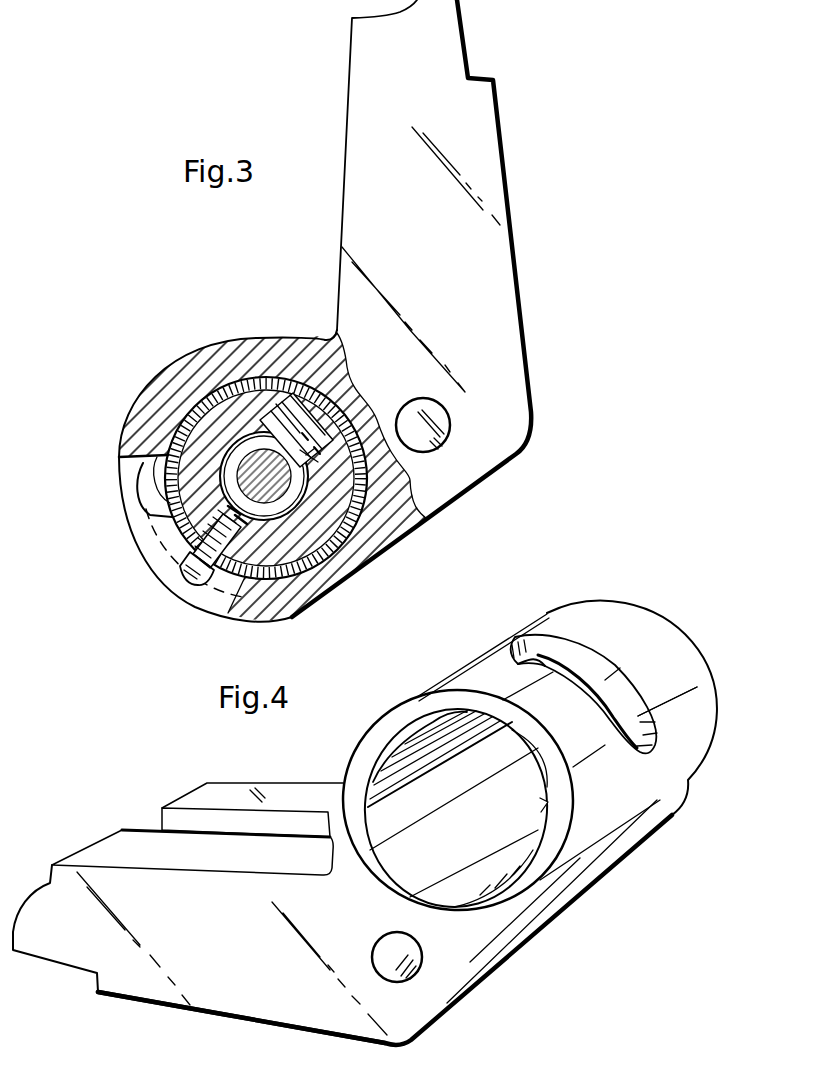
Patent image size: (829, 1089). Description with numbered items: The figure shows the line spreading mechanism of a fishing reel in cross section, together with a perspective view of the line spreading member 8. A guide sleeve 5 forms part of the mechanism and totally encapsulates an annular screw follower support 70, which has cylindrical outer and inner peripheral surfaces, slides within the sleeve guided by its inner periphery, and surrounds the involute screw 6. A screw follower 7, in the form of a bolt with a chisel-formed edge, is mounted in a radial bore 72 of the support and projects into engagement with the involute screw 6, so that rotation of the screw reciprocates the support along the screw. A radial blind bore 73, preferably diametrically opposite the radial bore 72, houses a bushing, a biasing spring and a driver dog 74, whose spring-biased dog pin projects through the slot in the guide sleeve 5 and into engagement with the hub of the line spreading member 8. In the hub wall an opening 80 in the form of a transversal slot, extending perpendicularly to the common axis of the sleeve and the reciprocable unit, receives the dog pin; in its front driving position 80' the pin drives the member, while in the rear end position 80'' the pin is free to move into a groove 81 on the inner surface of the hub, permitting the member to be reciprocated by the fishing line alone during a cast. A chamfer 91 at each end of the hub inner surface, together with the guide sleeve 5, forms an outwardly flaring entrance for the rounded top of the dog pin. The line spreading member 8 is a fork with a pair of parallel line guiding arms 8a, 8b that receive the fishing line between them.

In FIG. 3, the guide sleeve 5 is at (362, 523).
In FIG. 3, the involute screw 6 is at (341, 594).
In FIG. 3, the screw follower 7 is at (292, 410).
In FIG. 3, the line spreading member 8 is at (495, 267).
In FIG. 4, the line spreading member 8 is at (158, 830).
In FIG. 4, the line guiding arm 8a is at (213, 975).
In FIG. 4, the line guiding arm 8b is at (247, 802).
In FIG. 3, the screw follower support 70 is at (225, 385).
In FIG. 3, the radial bore 72 is at (257, 400).
In FIG. 3, the radial blind bore 73 is at (287, 567).
In FIG. 3, the driver dog 74 is at (258, 585).
In FIG. 4, the driver dog 74 is at (693, 705).
In FIG. 3, the opening 80 is at (120, 489).
In FIG. 4, the opening 80 is at (592, 662).
In FIG. 4, the driving position 80' is at (682, 688).
In FIG. 4, the rear end position 80'' is at (501, 628).
In FIG. 3, the groove 81 is at (148, 479).
In FIG. 4, the groove 81 is at (527, 640).
In FIG. 4, the chamfer 91 is at (548, 802).